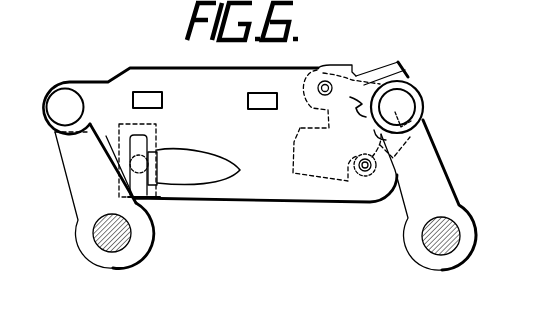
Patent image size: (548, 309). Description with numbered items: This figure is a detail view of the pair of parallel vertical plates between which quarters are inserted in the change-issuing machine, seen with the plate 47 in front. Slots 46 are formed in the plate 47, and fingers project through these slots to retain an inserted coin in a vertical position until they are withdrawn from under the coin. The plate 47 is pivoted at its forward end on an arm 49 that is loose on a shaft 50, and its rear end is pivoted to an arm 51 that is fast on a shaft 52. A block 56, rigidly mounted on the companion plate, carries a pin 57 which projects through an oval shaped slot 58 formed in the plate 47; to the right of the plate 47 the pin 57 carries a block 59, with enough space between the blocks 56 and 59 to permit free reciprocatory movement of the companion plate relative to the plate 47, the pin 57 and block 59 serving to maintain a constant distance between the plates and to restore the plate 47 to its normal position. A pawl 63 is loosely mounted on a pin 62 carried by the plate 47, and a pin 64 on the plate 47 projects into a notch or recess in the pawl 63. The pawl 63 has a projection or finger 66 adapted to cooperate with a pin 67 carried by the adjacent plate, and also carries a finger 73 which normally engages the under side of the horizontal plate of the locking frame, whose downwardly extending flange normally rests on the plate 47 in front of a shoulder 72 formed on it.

The slots 46 is at (248, 103).
The plate 47 is at (166, 69).
The arm 49 is at (80, 190).
The shaft 50 is at (100, 232).
The arm 51 is at (437, 184).
The shaft 52 is at (437, 232).
The block 56 is at (119, 128).
The pin 57 is at (140, 160).
The oval shaped slot 58 is at (214, 153).
The block 59 is at (141, 176).
The pin 62 is at (317, 78).
The pawl 63 is at (333, 183).
The pin 64 is at (368, 177).
The projection or finger 66 is at (413, 147).
The pin 67 is at (347, 103).
The shoulder 72 is at (348, 65).
The finger 73 is at (387, 66).